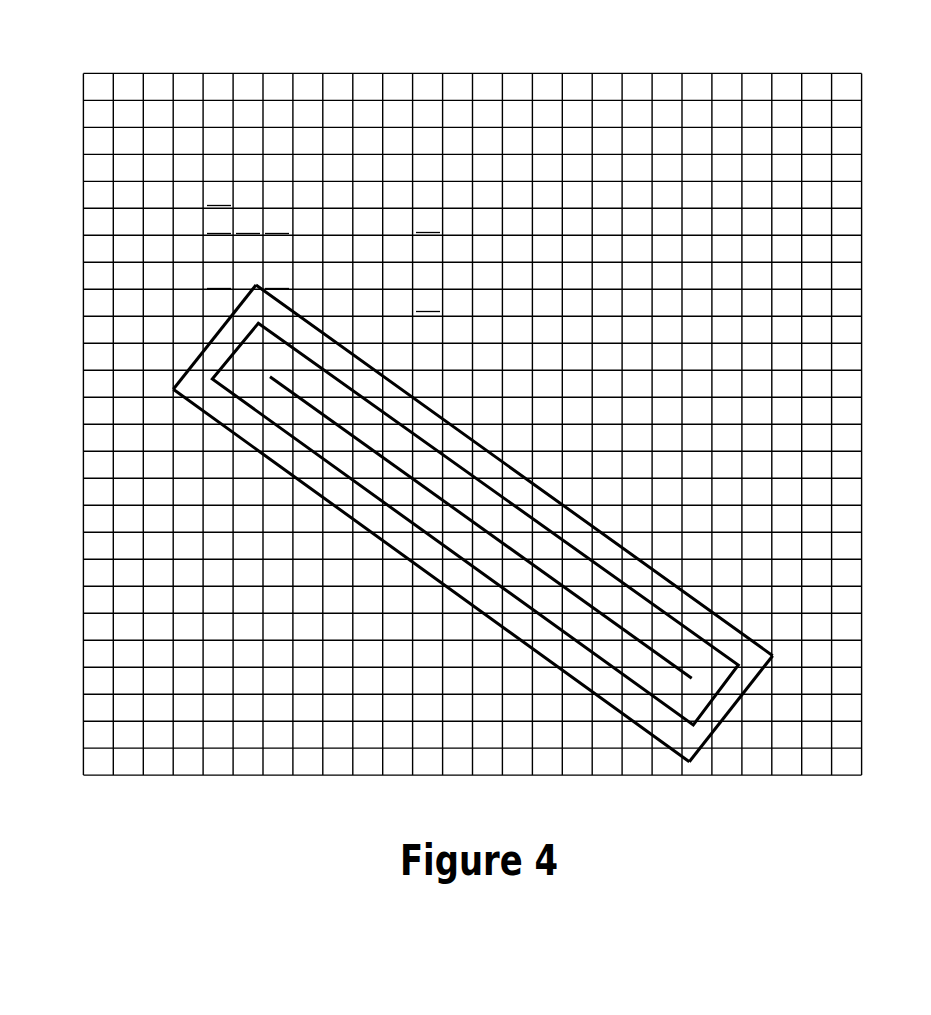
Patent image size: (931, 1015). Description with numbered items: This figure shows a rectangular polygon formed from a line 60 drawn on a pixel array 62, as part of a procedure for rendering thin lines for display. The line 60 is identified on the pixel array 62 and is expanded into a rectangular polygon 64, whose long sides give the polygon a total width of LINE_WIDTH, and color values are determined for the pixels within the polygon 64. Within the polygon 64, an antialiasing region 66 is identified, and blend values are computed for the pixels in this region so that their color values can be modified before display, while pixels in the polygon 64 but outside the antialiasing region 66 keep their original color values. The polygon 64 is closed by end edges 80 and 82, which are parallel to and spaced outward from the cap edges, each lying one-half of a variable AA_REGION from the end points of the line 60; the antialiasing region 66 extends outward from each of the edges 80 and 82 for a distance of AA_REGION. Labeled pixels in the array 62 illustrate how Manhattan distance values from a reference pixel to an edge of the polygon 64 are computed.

The pixel array 62 is at (160, 37).
The line 60 is at (457, 508).
The rectangular polygon 64 is at (450, 592).
The antialiasing region 66 is at (610, 572).
The end edge 80 is at (205, 343).
The end edge 82 is at (730, 712).